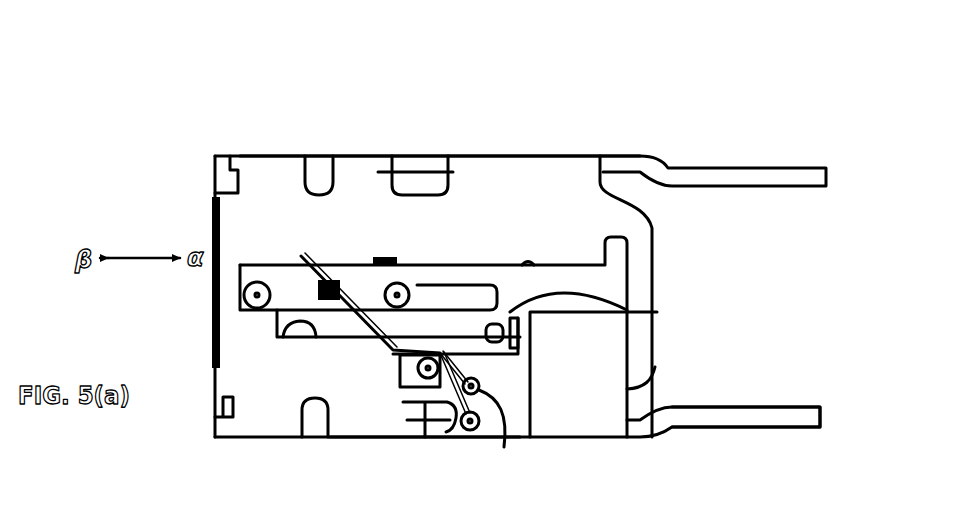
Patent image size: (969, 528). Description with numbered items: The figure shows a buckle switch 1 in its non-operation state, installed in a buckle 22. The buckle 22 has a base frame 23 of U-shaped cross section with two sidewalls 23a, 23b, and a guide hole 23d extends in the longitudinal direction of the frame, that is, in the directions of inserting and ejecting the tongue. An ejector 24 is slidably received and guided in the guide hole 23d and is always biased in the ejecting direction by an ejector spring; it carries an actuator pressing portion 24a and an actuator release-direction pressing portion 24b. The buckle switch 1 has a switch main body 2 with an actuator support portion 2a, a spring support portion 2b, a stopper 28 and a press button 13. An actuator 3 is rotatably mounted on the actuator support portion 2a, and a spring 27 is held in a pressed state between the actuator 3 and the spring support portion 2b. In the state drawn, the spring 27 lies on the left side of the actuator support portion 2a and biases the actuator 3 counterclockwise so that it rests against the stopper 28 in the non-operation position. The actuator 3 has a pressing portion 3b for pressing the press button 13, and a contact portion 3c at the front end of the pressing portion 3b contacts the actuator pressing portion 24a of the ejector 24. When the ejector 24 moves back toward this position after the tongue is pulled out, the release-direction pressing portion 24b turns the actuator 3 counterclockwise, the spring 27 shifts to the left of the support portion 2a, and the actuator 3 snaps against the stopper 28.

The buckle switch 1 is at (603, 375).
The switch main body 2 is at (588, 418).
The actuator support portion 2a is at (481, 396).
The spring support portion 2b is at (478, 432).
The actuator 3 is at (375, 349).
The pressing portion 3b is at (421, 362).
The contact portion 3c is at (342, 295).
The press button 13 is at (657, 307).
The buckle 22 is at (583, 143).
The base frame 23 is at (534, 190).
The sidewall 23a is at (430, 167).
The sidewall 23b is at (404, 431).
The guide hole 23d is at (287, 340).
The ejector 24 is at (283, 287).
The actuator pressing portion 24a is at (244, 295).
The actuator release-direction pressing portion 24b is at (403, 257).
The spring 27 is at (452, 426).
The stopper 28 is at (420, 372).